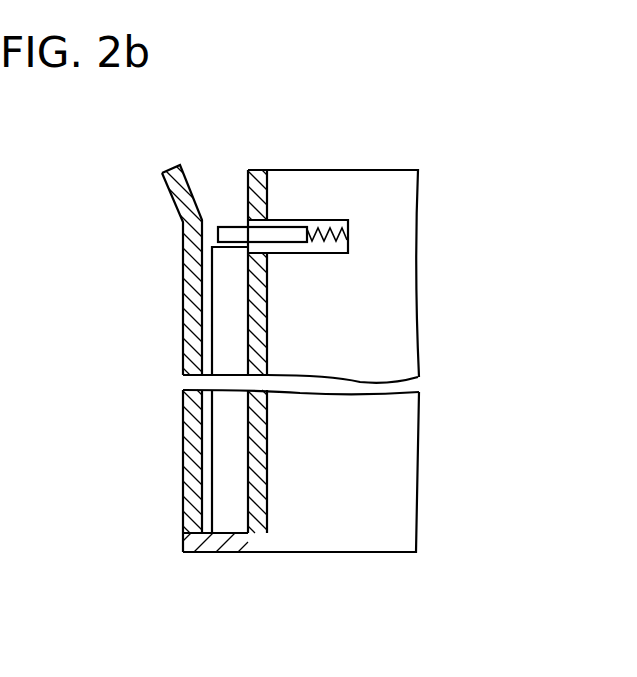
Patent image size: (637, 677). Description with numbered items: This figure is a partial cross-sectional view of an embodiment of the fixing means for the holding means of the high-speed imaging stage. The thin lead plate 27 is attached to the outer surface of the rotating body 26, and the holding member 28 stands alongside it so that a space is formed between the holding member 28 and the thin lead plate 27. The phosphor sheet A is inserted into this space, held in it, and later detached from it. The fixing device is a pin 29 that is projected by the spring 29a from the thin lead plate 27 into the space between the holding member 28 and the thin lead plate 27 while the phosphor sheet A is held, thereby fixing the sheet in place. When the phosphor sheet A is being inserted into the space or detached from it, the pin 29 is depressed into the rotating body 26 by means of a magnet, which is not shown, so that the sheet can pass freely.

The rotating body 26 is at (398, 305).
The thin lead plate 27 is at (248, 337).
The holding member 28 is at (183, 246).
The pin 29 is at (228, 227).
The spring 29a is at (341, 220).
The phosphor sheet A is at (230, 283).